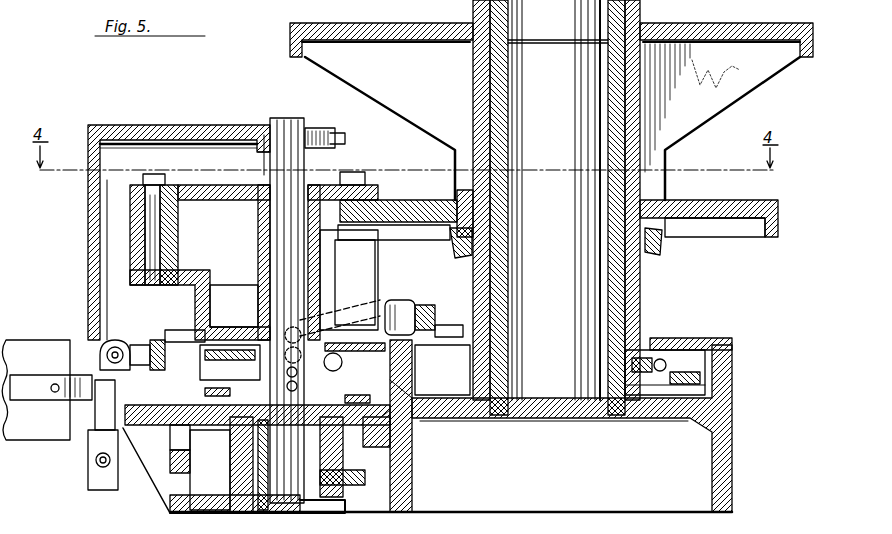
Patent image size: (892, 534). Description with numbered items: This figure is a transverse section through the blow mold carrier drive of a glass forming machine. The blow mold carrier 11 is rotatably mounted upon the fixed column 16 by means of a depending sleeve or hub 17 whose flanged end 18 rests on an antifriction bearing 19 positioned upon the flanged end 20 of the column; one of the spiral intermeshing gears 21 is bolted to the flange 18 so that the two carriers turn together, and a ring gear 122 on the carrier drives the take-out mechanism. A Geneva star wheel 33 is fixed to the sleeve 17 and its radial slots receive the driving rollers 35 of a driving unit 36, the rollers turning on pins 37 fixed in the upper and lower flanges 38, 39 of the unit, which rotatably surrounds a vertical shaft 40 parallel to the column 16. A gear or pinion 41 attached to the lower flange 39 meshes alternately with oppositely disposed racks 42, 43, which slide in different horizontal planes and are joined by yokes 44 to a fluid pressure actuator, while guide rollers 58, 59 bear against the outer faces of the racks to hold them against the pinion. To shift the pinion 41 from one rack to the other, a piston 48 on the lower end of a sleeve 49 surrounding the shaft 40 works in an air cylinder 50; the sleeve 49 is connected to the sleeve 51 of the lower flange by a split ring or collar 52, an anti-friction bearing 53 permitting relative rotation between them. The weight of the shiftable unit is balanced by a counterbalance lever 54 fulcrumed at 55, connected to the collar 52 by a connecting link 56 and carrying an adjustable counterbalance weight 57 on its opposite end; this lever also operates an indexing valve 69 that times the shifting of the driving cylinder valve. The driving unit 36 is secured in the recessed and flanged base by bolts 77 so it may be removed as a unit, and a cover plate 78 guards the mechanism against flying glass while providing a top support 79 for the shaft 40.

The blow mold carrier 11 is at (446, 23).
The column 16 is at (608, 248).
The sleeve or hub 17 is at (626, 272).
The flanged end 18 is at (455, 330).
The antifriction bearing 19 is at (512, 366).
The flanged end of the column 20 is at (505, 382).
The intermeshing gears 21 is at (432, 420).
The Geneva star wheel 33 is at (736, 200).
The driving rollers 35 is at (180, 236).
The driving unit 36 is at (195, 292).
The pins 37 is at (150, 232).
The upper flange 38 is at (238, 178).
The lower flange 39 is at (213, 285).
The vertical shaft 40 is at (290, 128).
The gear (pinion) 41 is at (215, 326).
The rack 42 is at (190, 332).
The rack 43 is at (396, 300).
The yokes 44 is at (348, 310).
The piston 48 is at (343, 470).
The sleeve 49 is at (345, 448).
The air cylinder 50 is at (240, 450).
The sleeve of the lower flange 51 is at (333, 326).
The split ring or collar 52 is at (246, 375).
The anti-friction bearing 53 is at (342, 370).
The counterbalance lever 54 is at (72, 372).
The fulcrum 55 is at (172, 416).
The connecting link 56 is at (295, 400).
The counterbalance weight 57 is at (50, 438).
The guide roller 58 is at (140, 340).
The guide roller 59 is at (430, 306).
The indexing valve 69 is at (88, 476).
The bolts 77 is at (205, 394).
The cover plate 78 is at (128, 125).
The top support 79 is at (265, 128).
The ring gear 122 is at (662, 250).